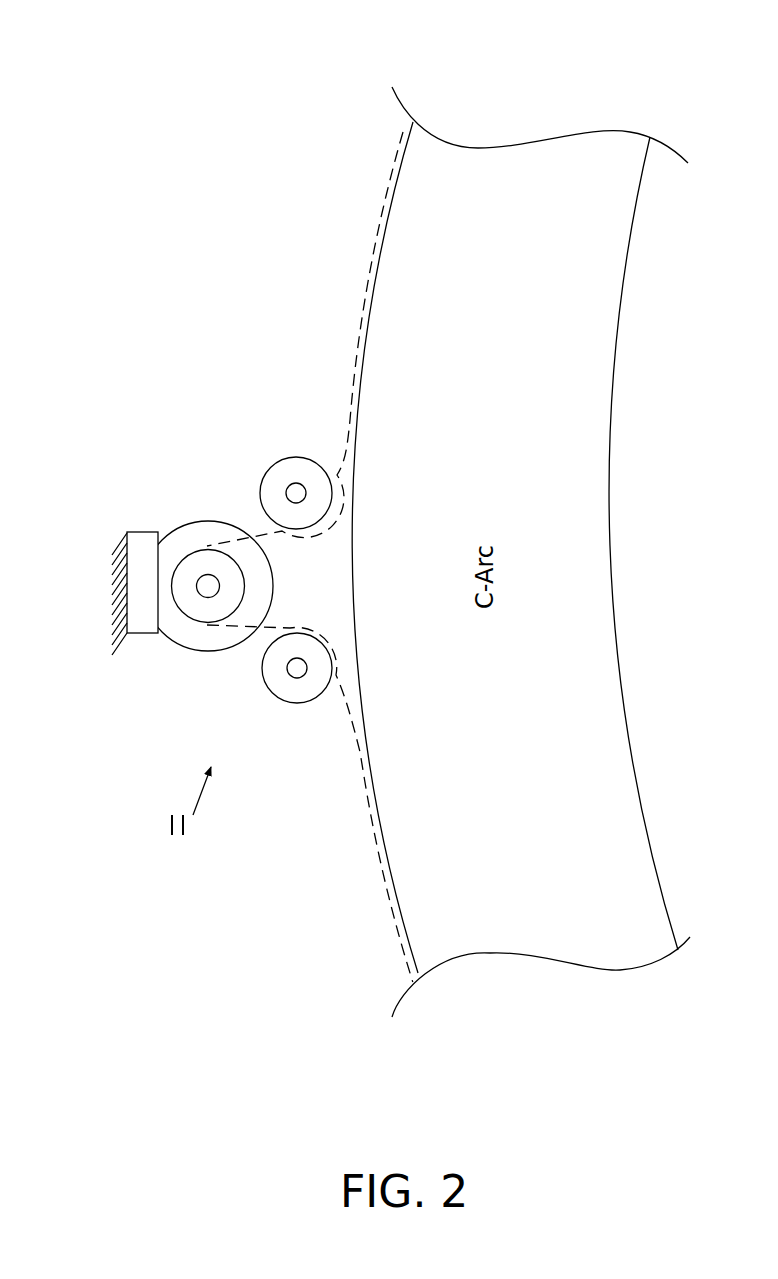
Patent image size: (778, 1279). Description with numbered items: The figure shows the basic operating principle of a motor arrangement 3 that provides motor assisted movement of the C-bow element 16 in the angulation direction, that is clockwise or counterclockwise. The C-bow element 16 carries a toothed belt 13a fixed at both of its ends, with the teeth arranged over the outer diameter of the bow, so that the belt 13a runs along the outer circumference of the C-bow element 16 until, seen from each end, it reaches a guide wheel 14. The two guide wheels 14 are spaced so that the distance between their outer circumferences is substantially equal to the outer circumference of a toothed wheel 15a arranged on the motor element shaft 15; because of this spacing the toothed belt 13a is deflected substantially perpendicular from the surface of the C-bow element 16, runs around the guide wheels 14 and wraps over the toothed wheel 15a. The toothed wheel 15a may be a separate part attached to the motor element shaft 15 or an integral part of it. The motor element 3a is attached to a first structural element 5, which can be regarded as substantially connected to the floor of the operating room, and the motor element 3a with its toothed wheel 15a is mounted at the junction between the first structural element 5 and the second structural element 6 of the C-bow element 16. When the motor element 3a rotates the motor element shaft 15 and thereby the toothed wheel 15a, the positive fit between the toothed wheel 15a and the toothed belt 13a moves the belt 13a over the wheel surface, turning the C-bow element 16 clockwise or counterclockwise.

The motor arrangement 3 is at (188, 370).
The motor element 3a is at (182, 516).
The first structural element 5 is at (141, 550).
The second structural element 6 is at (594, 760).
The toothed belt 13a is at (387, 213).
The guide wheel 14 is at (296, 452).
The motor element shaft 15 is at (212, 582).
The toothed wheel 15a is at (218, 603).
The C-bow element 16 is at (572, 453).